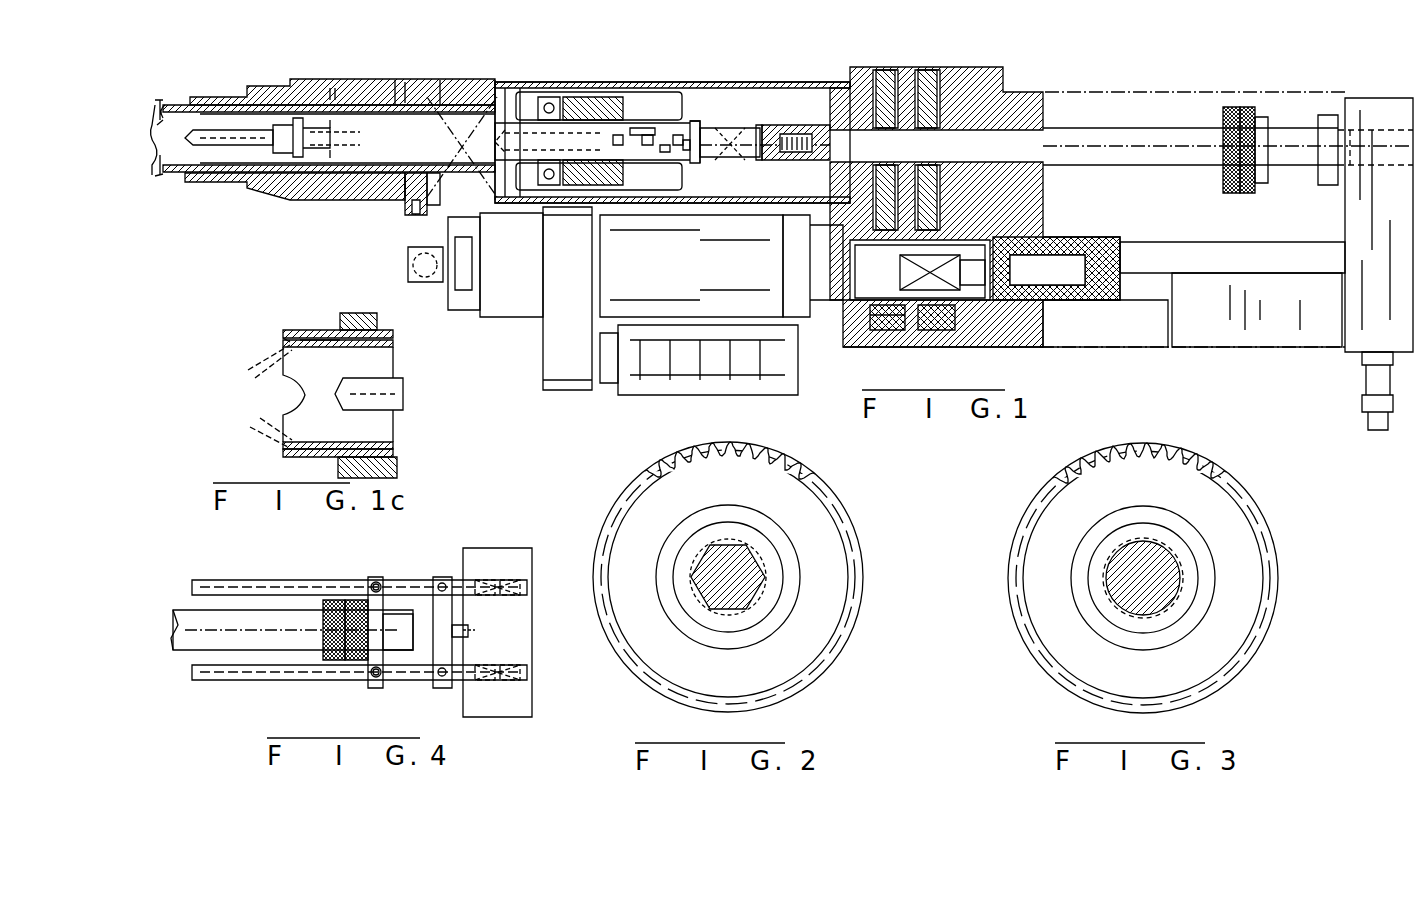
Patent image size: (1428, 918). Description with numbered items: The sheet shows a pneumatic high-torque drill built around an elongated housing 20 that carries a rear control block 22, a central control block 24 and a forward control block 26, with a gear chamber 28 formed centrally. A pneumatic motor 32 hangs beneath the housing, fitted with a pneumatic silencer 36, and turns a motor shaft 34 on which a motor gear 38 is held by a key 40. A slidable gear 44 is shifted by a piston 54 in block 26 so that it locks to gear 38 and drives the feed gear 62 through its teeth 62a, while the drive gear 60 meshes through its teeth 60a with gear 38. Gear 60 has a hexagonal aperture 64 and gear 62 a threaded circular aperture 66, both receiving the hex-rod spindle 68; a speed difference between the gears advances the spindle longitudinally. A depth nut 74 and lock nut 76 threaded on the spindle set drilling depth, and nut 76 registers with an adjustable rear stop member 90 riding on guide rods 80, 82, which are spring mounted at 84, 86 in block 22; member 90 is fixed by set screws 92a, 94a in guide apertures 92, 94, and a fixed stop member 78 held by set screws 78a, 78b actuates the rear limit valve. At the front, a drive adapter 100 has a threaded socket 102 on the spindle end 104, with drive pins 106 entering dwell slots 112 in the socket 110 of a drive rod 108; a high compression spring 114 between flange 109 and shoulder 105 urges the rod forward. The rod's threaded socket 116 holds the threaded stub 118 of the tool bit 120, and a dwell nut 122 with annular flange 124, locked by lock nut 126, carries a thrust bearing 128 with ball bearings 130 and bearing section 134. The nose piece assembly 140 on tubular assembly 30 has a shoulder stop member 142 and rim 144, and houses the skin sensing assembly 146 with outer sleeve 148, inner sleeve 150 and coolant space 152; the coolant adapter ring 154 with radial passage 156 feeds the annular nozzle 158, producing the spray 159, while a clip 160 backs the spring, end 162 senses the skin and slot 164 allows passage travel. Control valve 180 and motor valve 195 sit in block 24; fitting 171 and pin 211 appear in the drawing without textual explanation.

In FIG. 1, the elongated housing 20 is at (801, 63).
In FIG. 1, the rear control block 22 is at (1370, 98).
In FIG. 4, the rear control block 22 is at (488, 558).
In FIG. 1, the central control block 24 is at (1145, 349).
In FIG. 1, the forward control block 26 is at (1005, 349).
In FIG. 1, the gear chamber 28 is at (950, 80).
In FIG. 1, the tubular assembly 30 is at (530, 70).
In FIG. 1, the pneumatic motor 32 is at (740, 291).
In FIG. 1, the motor shaft 34 is at (870, 280).
In FIG. 1, the pneumatic silencer 36 is at (715, 380).
In FIG. 1, the motor gear 38 is at (885, 332).
In FIG. 1, the key 40 is at (822, 258).
In FIG. 1, the gear 44 is at (935, 332).
In FIG. 1, the piston 54 is at (1045, 242).
In FIG. 1, the drive gear 60 is at (888, 88).
In FIG. 2, the drive gear 60 is at (832, 597).
In FIG. 2, the teeth of drive gear 60a is at (770, 455).
In FIG. 1, the feed gear 62 is at (930, 88).
In FIG. 3, the feed gear 62 is at (1235, 592).
In FIG. 3, the teeth of feed gear 62a is at (1180, 455).
In FIG. 2, the hexagonal aperture 64 is at (760, 566).
In FIG. 3, the threaded circular aperture 66 is at (1175, 568).
In FIG. 1, the hex-rod spindle 68 is at (1133, 130).
In FIG. 4, the hex-rod spindle 68 is at (190, 612).
In FIG. 2, the hex-rod spindle 68 is at (755, 588).
In FIG. 3, the hex-rod spindle 68 is at (1170, 592).
In FIG. 1, the depth nut 74 is at (1232, 107).
In FIG. 4, the depth nut 74 is at (332, 662).
In FIG. 1, the lock nut 76 is at (1248, 107).
In FIG. 4, the lock nut 76 is at (355, 662).
In FIG. 4, the fixed stop member 78 is at (444, 583).
In FIG. 4, the set screw 78a is at (442, 678).
In FIG. 4, the set screw 78b is at (440, 583).
In FIG. 4, the guide rod 80 is at (240, 680).
In FIG. 1, the guide rod 82 is at (1330, 115).
In FIG. 4, the guide rod 82 is at (235, 580).
In FIG. 4, the spring mounting 84 is at (530, 680).
In FIG. 4, the spring mounting 86 is at (530, 590).
In FIG. 1, the adjustable rear stop member 90 is at (1262, 117).
In FIG. 4, the adjustable rear stop member 90 is at (378, 577).
In FIG. 4, the guide aperture 92 is at (385, 678).
In FIG. 4, the set screw 92a is at (373, 680).
In FIG. 4, the guide aperture 94 is at (380, 585).
In FIG. 4, the set screw 94a is at (372, 584).
In FIG. 1, the drive adapter 100 is at (728, 128).
In FIG. 1, the threaded socket 102 is at (790, 132).
In FIG. 1, the end of spindle 104 is at (812, 143).
In FIG. 1, the shoulder 105 is at (758, 160).
In FIG. 1, the drive pins 106 is at (652, 130).
In FIG. 1, the drive rod 108 is at (688, 162).
In FIG. 1, the flange 109 is at (693, 122).
In FIG. 1, the socket 110 is at (665, 195).
In FIG. 1, the dwell slots 112 is at (617, 148).
In FIG. 1, the high compression spring 114 is at (695, 158).
In FIG. 1, the threaded socket 116 is at (310, 160).
In FIG. 1, the threaded stub 118 is at (345, 135).
In FIG. 1, the tool bit 120 is at (230, 128).
In FIG. 1C, the tool bit 120 is at (395, 392).
In FIG. 1, the dwell nut 122 is at (590, 97).
In FIG. 1, the annular flange 124 is at (540, 180).
In FIG. 1, the lock nut 126 is at (600, 92).
In FIG. 1, the thrust bearing 128 is at (549, 100).
In FIG. 1, the ball bearings 130 is at (550, 182).
In FIG. 1, the bearing section 134 is at (553, 106).
In FIG. 1, the annular nose piece assembly 140 is at (293, 69).
In FIG. 1, the annular shoulder stop member 142 is at (398, 80).
In FIG. 1, the annular rim 144 is at (200, 190).
In FIG. 1C, the annular rim 144 is at (342, 322).
In FIG. 1, the skin sensing assembly 146 is at (408, 90).
In FIG. 1, the outer sleeve 148 is at (430, 105).
In FIG. 1C, the outer sleeve 148 is at (380, 336).
In FIG. 1, the inner sleeve 150 is at (365, 160).
In FIG. 1C, the inner sleeve 150 is at (380, 348).
In FIG. 1, the annular coolant flow space 152 is at (342, 95).
In FIG. 1C, the annular coolant flow space 152 is at (345, 350).
In FIG. 1, the coolant adapter ring 154 is at (428, 100).
In FIG. 1, the radial passage 156 is at (408, 212).
In FIG. 1, the annular nozzle 158 is at (178, 105).
In FIG. 1C, the annular nozzle 158 is at (292, 447).
In FIG. 1, the coolant spray 159 is at (485, 95).
In FIG. 1C, the coolant spray 159 is at (265, 420).
In FIG. 1, the circular clip 160 is at (510, 80).
In FIG. 1, the end of outer sleeve 162 is at (160, 172).
In FIG. 1C, the end of outer sleeve 162 is at (283, 340).
In FIG. 1, the longitudinal slot 164 is at (440, 205).
In FIG. 1, the air fitting 171 is at (1366, 385).
In FIG. 1, the control valve 180 is at (1120, 349).
In FIG. 1, the motor valve 195 is at (1250, 349).
In FIG. 4, the pin 211 is at (462, 625).